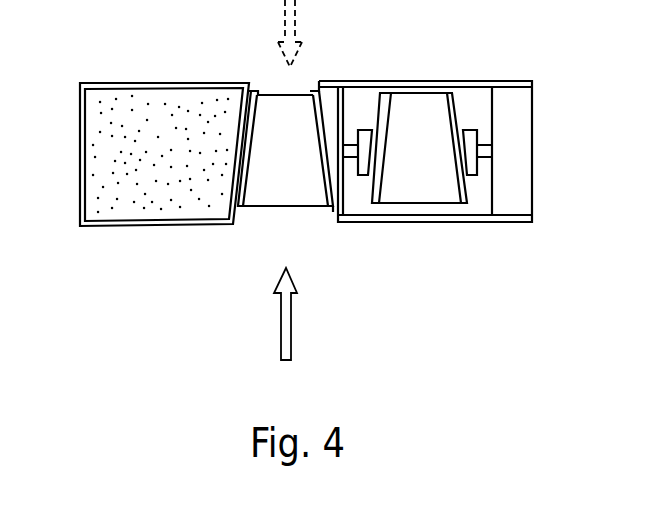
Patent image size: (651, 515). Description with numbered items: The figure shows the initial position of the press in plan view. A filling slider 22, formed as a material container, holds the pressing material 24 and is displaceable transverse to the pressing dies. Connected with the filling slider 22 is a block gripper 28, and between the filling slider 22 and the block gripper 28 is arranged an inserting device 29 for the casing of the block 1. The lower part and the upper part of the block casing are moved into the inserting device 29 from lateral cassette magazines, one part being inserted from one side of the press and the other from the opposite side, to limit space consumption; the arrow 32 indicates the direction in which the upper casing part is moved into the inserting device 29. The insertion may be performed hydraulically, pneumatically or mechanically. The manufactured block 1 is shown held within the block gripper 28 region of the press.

The block 1 is at (432, 176).
The filling slider 22 is at (125, 85).
The pressing material 24 is at (177, 172).
The block gripper 28 is at (414, 84).
The inserting device 29 is at (300, 190).
The arrow 32 is at (267, 321).